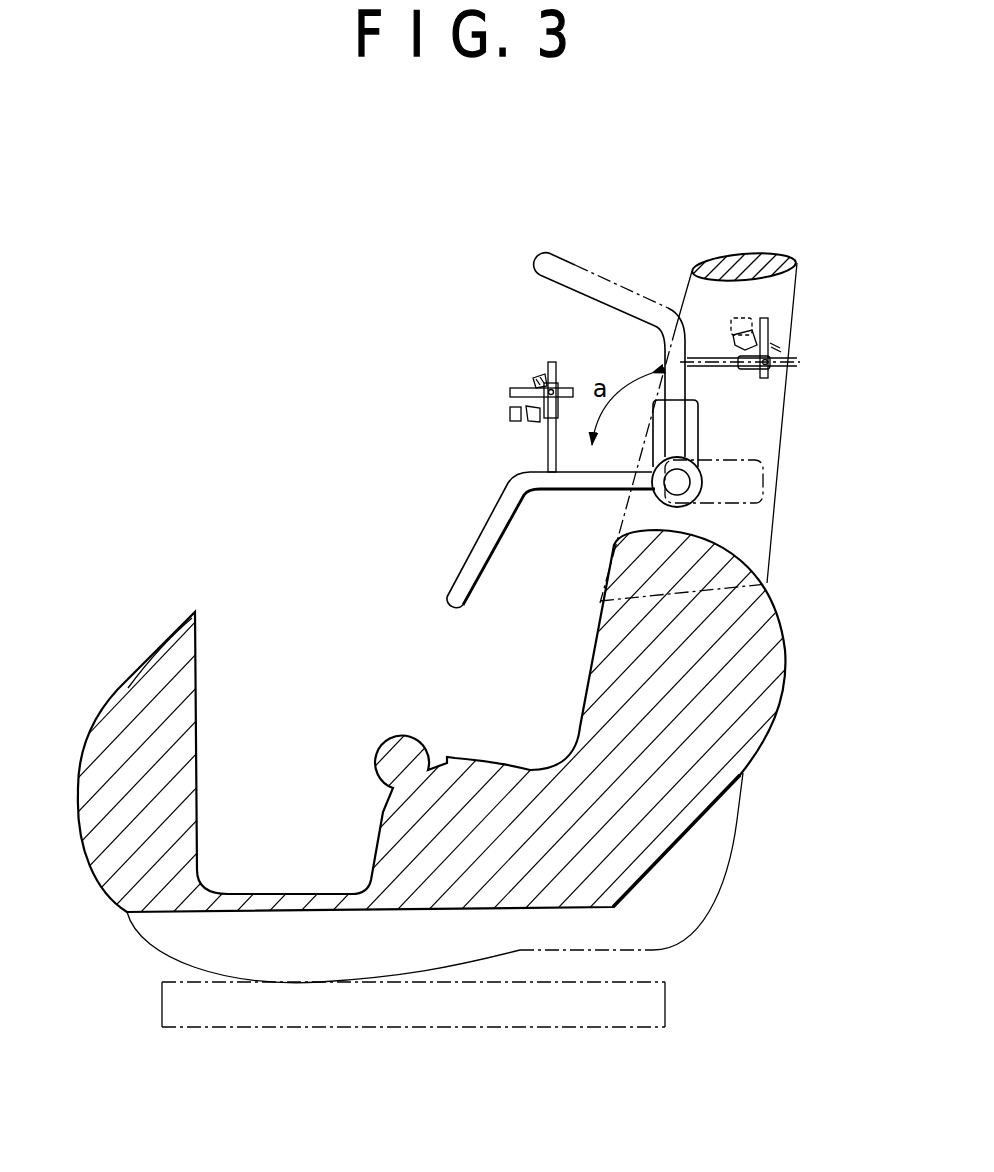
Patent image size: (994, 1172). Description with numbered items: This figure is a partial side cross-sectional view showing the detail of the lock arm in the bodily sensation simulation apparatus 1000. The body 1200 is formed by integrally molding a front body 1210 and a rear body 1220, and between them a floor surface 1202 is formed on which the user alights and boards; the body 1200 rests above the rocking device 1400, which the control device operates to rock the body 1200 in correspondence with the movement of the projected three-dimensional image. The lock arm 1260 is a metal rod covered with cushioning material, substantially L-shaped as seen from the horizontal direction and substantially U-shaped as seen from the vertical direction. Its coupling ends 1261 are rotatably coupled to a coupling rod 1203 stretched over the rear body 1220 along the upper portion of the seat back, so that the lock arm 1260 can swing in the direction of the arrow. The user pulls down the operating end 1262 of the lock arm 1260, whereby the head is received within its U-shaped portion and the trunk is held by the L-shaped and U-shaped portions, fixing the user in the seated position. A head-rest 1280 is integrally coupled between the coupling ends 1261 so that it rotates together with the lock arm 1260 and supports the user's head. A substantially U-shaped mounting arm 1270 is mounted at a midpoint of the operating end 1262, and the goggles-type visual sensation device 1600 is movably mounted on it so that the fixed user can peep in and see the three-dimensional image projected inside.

The bodily sensation simulation apparatus 1000 is at (288, 522).
The body 1200 is at (168, 625).
The floor surface 1202 is at (292, 893).
The coupling rod 1203 is at (686, 480).
The front body 1210 is at (110, 768).
The rear body 1220 is at (750, 630).
The lock arm 1260 is at (550, 288).
The coupling end 1261 is at (690, 484).
The operating end 1262 is at (572, 266).
The mounting arm 1270 is at (722, 356).
The head-rest 1280 is at (695, 413).
The rocking device 1400 is at (162, 1008).
The visual sensation device 1600 is at (803, 348).